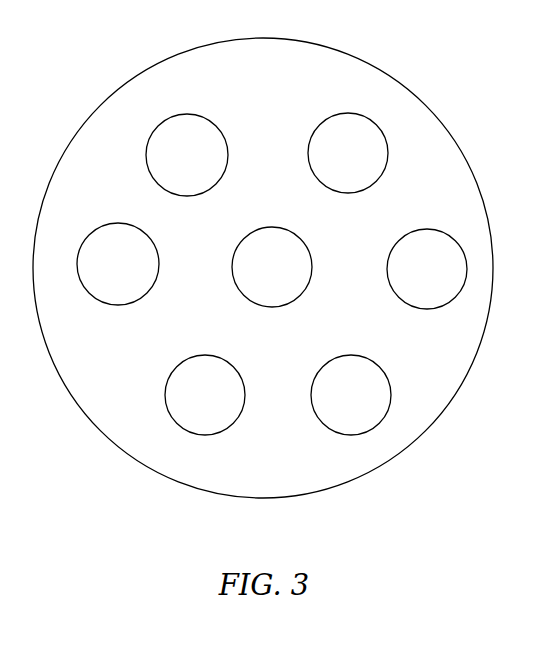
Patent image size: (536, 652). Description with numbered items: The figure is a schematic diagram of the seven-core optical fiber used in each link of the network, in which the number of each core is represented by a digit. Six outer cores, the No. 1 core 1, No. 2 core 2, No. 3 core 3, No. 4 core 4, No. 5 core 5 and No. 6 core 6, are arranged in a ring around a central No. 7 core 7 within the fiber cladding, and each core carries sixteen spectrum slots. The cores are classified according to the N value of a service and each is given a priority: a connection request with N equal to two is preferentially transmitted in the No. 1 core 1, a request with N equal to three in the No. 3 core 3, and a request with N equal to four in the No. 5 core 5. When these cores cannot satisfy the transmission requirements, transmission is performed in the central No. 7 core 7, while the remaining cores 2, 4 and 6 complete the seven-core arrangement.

The No. 1 core 1 is at (348, 153).
The No. 2 core 2 is at (427, 269).
The No. 3 core 3 is at (351, 395).
The No. 4 core 4 is at (205, 395).
The No. 5 core 5 is at (118, 264).
The No. 6 core 6 is at (187, 155).
The No. 7 core 7 is at (272, 267).